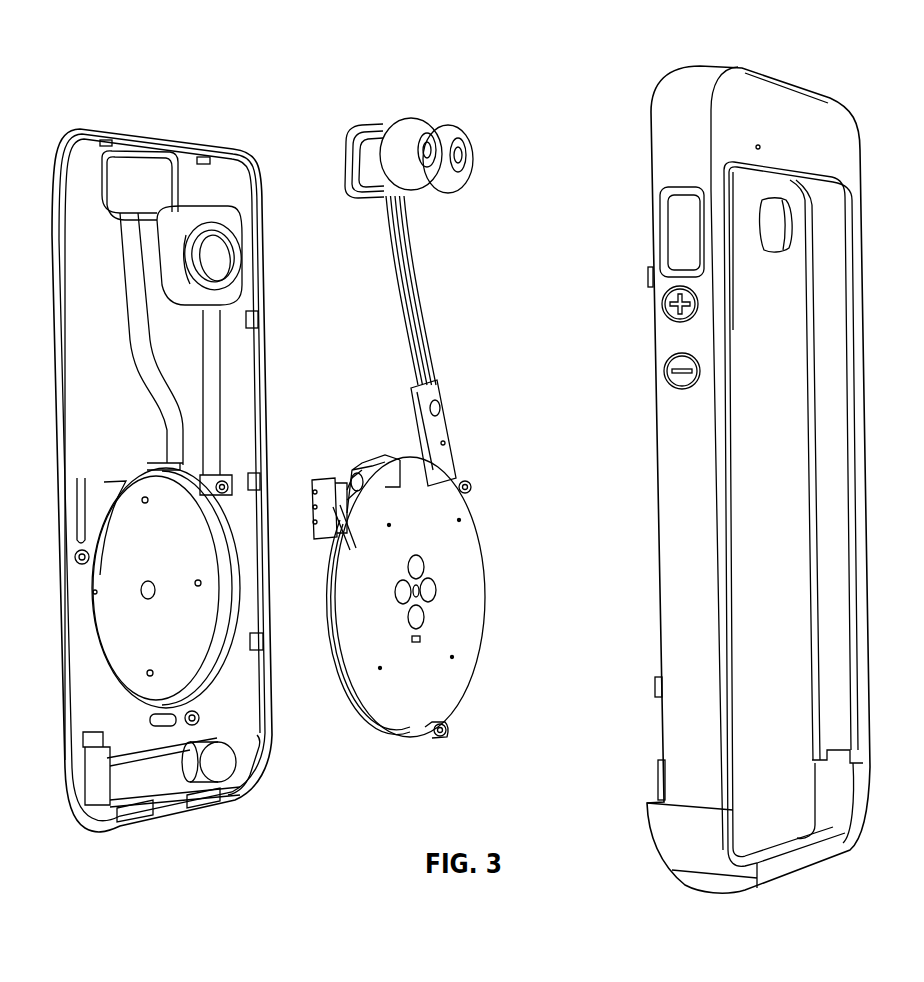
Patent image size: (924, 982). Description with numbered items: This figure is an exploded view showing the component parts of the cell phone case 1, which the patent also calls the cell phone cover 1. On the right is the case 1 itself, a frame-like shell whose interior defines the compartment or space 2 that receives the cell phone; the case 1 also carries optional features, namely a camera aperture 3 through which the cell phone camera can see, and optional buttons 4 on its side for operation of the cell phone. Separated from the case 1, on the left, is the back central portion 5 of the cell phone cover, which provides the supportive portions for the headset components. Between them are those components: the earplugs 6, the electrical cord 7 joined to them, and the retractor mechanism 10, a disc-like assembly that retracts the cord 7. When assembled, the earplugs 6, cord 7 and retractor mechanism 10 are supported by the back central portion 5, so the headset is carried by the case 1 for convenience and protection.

The cell phone case 1 is at (840, 125).
The compartment or space 2 is at (783, 452).
The camera aperture 3 is at (780, 227).
The buttons 4 is at (663, 303).
The back central portion 5 is at (236, 171).
The earplugs 6 is at (452, 122).
The electrical cord 7 is at (410, 260).
The retractor mechanism 10 is at (472, 541).